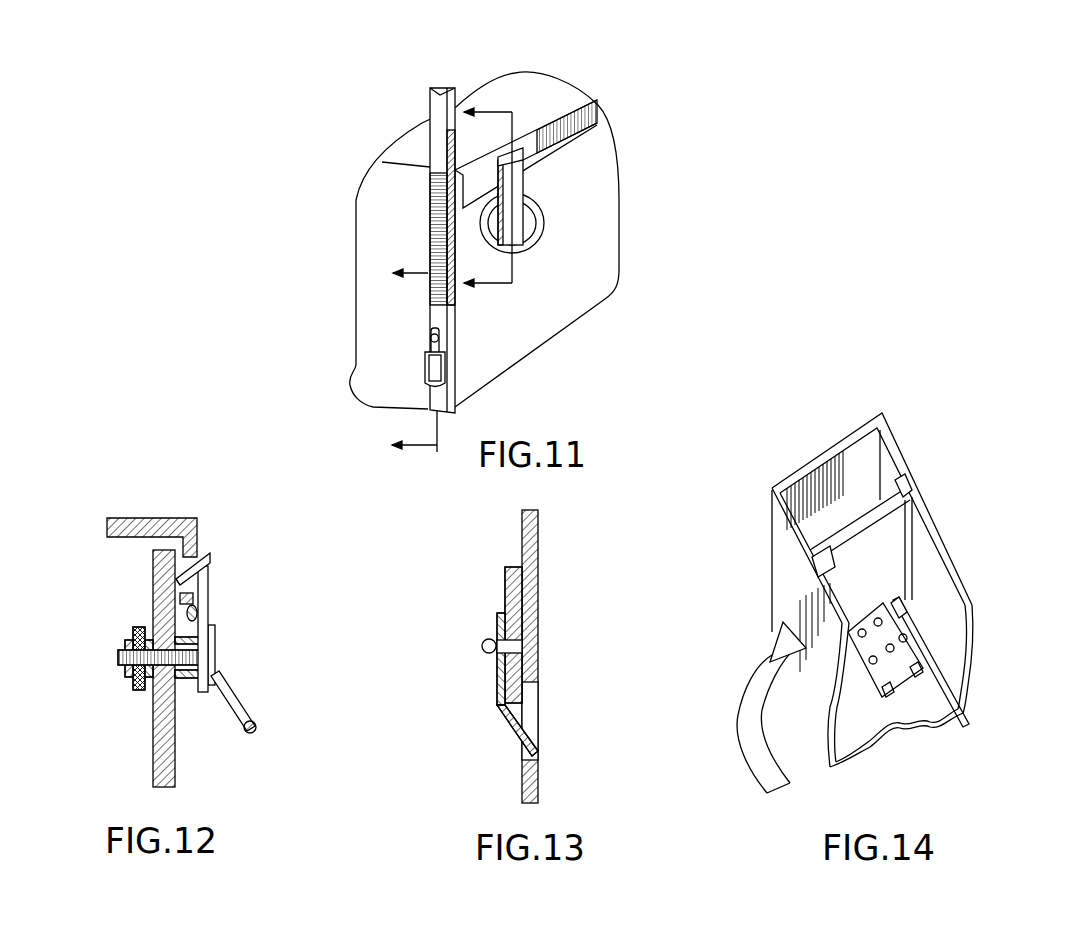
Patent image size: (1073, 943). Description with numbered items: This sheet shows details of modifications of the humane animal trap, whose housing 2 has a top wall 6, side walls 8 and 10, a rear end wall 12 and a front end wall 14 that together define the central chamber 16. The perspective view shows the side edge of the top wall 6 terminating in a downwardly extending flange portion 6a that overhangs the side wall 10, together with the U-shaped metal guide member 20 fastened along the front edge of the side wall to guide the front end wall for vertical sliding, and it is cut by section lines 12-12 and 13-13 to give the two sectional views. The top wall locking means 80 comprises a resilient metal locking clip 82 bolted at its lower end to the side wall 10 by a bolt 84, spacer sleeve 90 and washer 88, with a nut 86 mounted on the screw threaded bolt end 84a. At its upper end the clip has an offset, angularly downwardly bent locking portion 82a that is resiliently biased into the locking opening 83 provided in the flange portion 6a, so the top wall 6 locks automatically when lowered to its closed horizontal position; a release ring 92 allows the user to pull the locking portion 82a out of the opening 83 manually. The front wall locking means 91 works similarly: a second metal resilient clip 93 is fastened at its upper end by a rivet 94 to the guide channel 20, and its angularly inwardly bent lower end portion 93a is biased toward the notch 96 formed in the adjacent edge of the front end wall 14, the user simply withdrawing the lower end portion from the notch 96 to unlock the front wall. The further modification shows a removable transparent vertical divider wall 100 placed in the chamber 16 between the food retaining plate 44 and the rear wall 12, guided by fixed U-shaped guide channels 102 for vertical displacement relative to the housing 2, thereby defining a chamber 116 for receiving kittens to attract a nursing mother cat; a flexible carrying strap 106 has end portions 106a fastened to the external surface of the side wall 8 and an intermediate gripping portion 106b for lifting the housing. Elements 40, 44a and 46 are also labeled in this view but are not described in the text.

In FIG. 14, the housing 2 is at (890, 404).
In FIG. 11, the top wall 6 is at (403, 151).
In FIG. 12, the top wall 6 is at (153, 520).
In FIG. 11, the flange portion 6a is at (594, 102).
In FIG. 12, the flange portion 6a is at (200, 597).
In FIG. 14, the side wall 8 is at (773, 592).
In FIG. 11, the side wall 10 is at (567, 303).
In FIG. 12, the side wall 10 is at (153, 753).
In FIG. 14, the side wall 10 is at (973, 577).
In FIG. 11, the rear end wall 12 is at (487, 191).
In FIG. 14, the rear end wall 12 is at (825, 457).
In FIG. 11, the section line 13- 13 is at (409, 357).
In FIG. 11, the front end wall 14 is at (385, 312).
In FIG. 13, the front end wall 14 is at (538, 641).
In FIG. 14, the central chamber 16 is at (892, 715).
In FIG. 11, the guide member 20 is at (453, 346).
In FIG. 13, the guide member 20 is at (505, 588).
In FIG. 14, the support plate 40 is at (967, 593).
In FIG. 14, the food retaining plate 44 is at (907, 657).
In FIG. 14, the plate tab 44a is at (893, 600).
In FIG. 14, the interior space 46 is at (887, 697).
In FIG. 11, the top wall locking means 80 is at (550, 212).
In FIG. 12, the top wall locking means 80 is at (232, 553).
In FIG. 11, the locking clip 82 is at (525, 183).
In FIG. 12, the locking clip 82 is at (211, 586).
In FIG. 12, the locking portion 82a is at (178, 578).
In FIG. 11, the locking opening 83 is at (527, 152).
In FIG. 12, the locking opening 83 is at (195, 558).
In FIG. 12, the bolt 84 is at (218, 647).
In FIG. 12, the screw threaded bolt end 84a is at (118, 657).
In FIG. 12, the nut 86 is at (130, 689).
In FIG. 12, the washer 88 is at (139, 628).
In FIG. 12, the spacer sleeve 90 is at (187, 680).
In FIG. 11, the front wall locking means 91 is at (420, 345).
In FIG. 11, the release ring 92 is at (543, 225).
In FIG. 12, the release ring 92 is at (252, 697).
In FIG. 11, the second metal resilient clip 93 is at (428, 362).
In FIG. 13, the second metal resilient clip 93 is at (495, 692).
In FIG. 13, the lower end portion 93a is at (508, 740).
In FIG. 13, the rivet 94 is at (482, 648).
In FIG. 13, the notch 96 is at (531, 707).
In FIG. 14, the divider wall 100 is at (858, 540).
In FIG. 14, the guide channel 102 is at (915, 543).
In FIG. 14, the carrying strap 106 is at (733, 743).
In FIG. 14, the end portion 106a is at (783, 627).
In FIG. 14, the gripping portion 106b is at (739, 709).
In FIG. 14, the chamber 116 is at (853, 464).